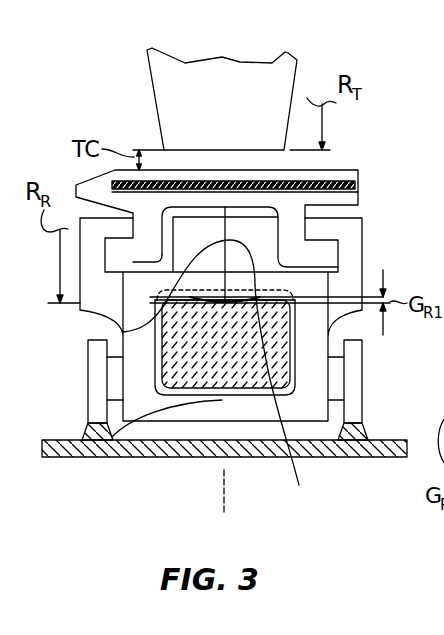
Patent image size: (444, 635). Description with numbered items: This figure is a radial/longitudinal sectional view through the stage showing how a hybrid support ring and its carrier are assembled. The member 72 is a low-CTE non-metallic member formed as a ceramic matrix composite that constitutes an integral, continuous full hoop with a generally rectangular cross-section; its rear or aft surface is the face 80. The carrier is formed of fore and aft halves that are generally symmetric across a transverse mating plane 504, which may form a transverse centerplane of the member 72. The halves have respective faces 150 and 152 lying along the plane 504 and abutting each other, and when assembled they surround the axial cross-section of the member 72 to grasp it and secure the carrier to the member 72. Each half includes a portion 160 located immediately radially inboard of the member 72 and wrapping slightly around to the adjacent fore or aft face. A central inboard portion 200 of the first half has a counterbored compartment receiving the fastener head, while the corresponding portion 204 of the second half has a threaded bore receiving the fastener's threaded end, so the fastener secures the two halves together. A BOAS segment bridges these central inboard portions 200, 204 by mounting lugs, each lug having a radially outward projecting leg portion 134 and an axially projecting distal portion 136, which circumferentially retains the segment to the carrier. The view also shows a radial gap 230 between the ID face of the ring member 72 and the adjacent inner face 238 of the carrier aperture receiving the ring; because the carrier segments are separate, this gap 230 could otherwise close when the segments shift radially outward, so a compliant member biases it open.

The central inboard portion 200 is at (200, 230).
The central inboard portion 204 is at (255, 237).
The leg portion 134 is at (359, 177).
The distal portion 136 is at (323, 253).
The portion 160 is at (263, 280).
The face 152 is at (123, 332).
The inner face 238 is at (200, 322).
The face 150 is at (232, 310).
The rear face 80 is at (289, 366).
The member 72 is at (112, 437).
The transverse mating plane 504 is at (222, 513).
The radial gap 230 is at (287, 403).